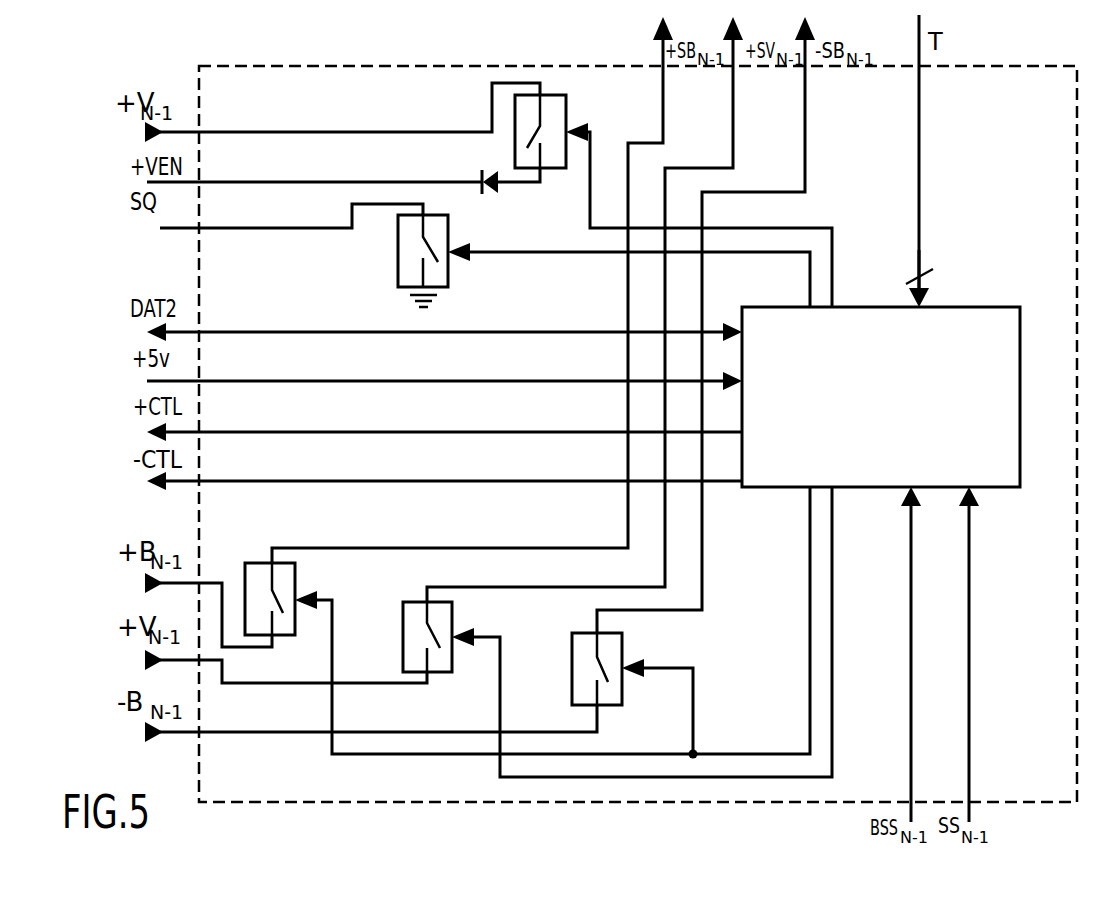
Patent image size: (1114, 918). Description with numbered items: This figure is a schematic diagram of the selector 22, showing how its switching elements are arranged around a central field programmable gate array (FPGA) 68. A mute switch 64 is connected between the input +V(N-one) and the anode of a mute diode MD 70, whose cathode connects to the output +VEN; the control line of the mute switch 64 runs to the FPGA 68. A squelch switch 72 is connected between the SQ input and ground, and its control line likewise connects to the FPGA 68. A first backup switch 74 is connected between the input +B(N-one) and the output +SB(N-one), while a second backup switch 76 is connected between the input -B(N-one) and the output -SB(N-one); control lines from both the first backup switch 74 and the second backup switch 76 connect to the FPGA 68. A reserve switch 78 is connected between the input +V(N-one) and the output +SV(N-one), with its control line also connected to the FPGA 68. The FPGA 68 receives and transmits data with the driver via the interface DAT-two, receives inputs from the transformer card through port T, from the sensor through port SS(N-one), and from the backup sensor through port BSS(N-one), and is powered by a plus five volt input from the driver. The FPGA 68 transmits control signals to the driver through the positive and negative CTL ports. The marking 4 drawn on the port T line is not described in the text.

The selector 22 is at (1010, 154).
The mute switch 64 is at (573, 128).
The mute diode MD 70 is at (466, 167).
The squelch switch 72 is at (476, 263).
The field programmable gate array (FPGA) 68 is at (892, 428).
The T bus (4 lines) 4 is at (935, 269).
The backup 1 switch 74 is at (324, 597).
The backup 2 switch 76 is at (653, 662).
The reserve switch 78 is at (483, 636).